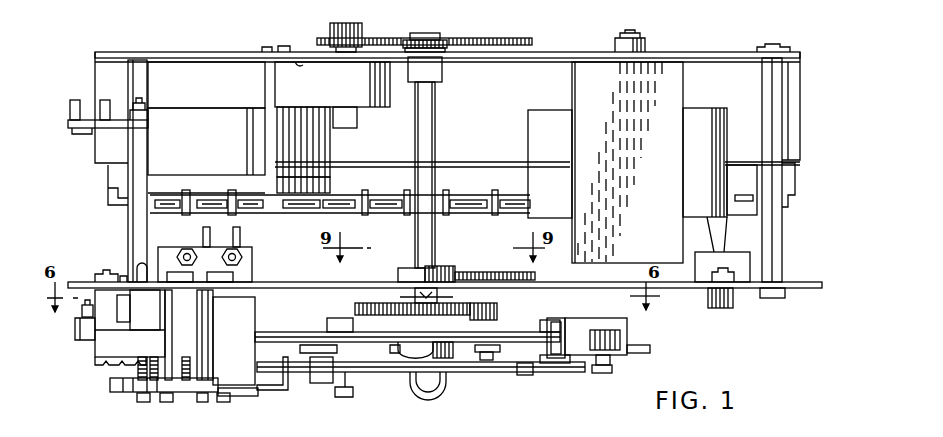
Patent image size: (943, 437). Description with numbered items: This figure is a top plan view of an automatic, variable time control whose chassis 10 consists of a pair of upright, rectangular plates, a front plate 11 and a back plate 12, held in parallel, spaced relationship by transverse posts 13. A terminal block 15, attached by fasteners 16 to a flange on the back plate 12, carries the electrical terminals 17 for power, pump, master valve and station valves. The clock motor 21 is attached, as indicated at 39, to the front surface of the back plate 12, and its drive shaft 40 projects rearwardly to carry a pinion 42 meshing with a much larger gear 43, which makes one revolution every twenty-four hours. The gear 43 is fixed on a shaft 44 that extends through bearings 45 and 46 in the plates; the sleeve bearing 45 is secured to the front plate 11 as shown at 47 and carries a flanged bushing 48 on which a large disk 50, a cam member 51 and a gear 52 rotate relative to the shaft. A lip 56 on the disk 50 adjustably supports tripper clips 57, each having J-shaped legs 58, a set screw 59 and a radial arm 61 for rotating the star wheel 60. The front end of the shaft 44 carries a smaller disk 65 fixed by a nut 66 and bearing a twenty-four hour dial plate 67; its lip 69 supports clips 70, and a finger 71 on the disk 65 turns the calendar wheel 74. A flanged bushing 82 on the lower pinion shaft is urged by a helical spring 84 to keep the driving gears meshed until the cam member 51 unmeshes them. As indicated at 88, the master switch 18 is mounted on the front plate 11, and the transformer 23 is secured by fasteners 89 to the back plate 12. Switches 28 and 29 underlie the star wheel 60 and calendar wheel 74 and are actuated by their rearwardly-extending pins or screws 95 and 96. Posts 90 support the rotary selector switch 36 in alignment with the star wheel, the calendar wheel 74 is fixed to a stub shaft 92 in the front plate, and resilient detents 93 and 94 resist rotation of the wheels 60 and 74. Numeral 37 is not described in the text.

The chassis 10 is at (95, 52).
The front plate 11 is at (812, 282).
The back plate 12 is at (736, 34).
The transverse posts 13 is at (262, 143).
The terminal block 15 is at (797, 184).
The fasteners 16 is at (128, 205).
The electrical terminals 17 is at (388, 206).
The master switch 18 is at (742, 262).
The clock motor 21 is at (205, 108).
The transformer 23 is at (713, 94).
The switch 28 is at (196, 247).
The switch 29 is at (150, 322).
The rotary selector switch 36 is at (76, 131).
The terminal strip 37 is at (90, 118).
The clock motor attachment 39 is at (298, 64).
The drive shaft 40 is at (360, 124).
The pinion 42 is at (332, 38).
The gear 43 is at (532, 42).
The shaft 44 is at (438, 122).
The bearing 45 is at (400, 305).
The bearing 46 is at (444, 72).
The sleeve bearing attachment 47 is at (398, 270).
The flanged bushing 48 is at (468, 303).
The disk 50 is at (290, 332).
The cam member 51 is at (352, 320).
The gear 52 is at (545, 322).
The lip 56 is at (550, 322).
The clips 57 is at (606, 320).
The J-shaped legs 58 is at (636, 342).
The set screw 59 is at (608, 373).
The star wheel 60 is at (95, 356).
The arms 61 is at (640, 356).
The disk 65 is at (388, 372).
The nut 66 is at (430, 396).
The dial plate 67 is at (478, 372).
The lip 69 is at (528, 372).
The clips 70 is at (335, 388).
The finger 71 is at (283, 388).
The calendar wheel 74 is at (113, 392).
The flanged bushing 82 is at (445, 266).
The helical spring 84 is at (505, 272).
The master switch mounting 88 is at (718, 272).
The fasteners 89 is at (636, 48).
The transverse posts 90 is at (130, 232).
The stub shaft 92 is at (205, 300).
The resilient detent 93 is at (78, 330).
The resilient detent 94 is at (240, 396).
The pins or screws 95 is at (82, 309).
The pins or screws 96 is at (160, 402).